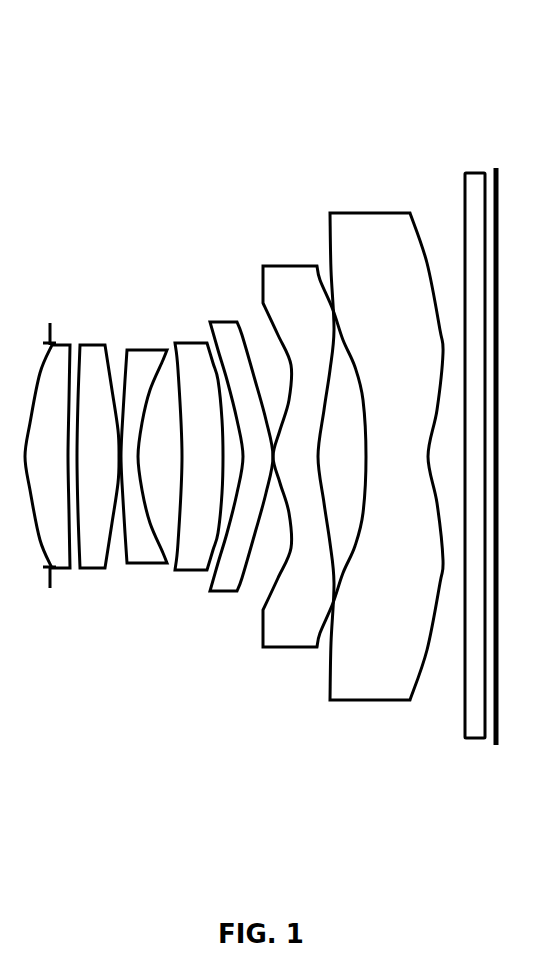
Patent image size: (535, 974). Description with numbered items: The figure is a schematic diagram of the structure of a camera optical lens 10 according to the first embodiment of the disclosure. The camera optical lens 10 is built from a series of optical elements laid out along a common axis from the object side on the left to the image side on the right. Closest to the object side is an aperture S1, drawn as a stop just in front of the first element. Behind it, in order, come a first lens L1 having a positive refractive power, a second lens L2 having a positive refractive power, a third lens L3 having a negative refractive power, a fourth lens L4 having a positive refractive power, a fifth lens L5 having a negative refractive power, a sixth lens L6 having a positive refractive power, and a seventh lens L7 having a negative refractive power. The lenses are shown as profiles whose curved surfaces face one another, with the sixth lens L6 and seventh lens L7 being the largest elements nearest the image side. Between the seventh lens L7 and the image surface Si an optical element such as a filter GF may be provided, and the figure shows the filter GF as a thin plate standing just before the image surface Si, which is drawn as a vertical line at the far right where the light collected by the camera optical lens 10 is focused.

The camera optical lens 10 is at (282, 45).
The aperture S1 is at (47, 442).
The first lens L1 is at (49, 445).
The second lens L2 is at (98, 445).
The third lens L3 is at (144, 446).
The fourth lens L4 is at (199, 446).
The fifth lens L5 is at (241, 445).
The sixth lens L6 is at (314, 445).
The seventh lens L7 is at (380, 444).
The filter GF is at (473, 444).
The image surface Si is at (495, 441).